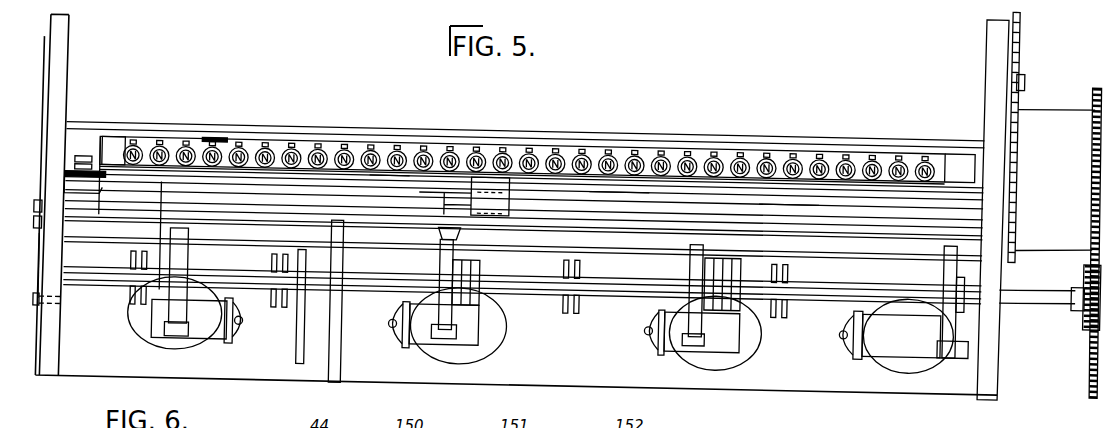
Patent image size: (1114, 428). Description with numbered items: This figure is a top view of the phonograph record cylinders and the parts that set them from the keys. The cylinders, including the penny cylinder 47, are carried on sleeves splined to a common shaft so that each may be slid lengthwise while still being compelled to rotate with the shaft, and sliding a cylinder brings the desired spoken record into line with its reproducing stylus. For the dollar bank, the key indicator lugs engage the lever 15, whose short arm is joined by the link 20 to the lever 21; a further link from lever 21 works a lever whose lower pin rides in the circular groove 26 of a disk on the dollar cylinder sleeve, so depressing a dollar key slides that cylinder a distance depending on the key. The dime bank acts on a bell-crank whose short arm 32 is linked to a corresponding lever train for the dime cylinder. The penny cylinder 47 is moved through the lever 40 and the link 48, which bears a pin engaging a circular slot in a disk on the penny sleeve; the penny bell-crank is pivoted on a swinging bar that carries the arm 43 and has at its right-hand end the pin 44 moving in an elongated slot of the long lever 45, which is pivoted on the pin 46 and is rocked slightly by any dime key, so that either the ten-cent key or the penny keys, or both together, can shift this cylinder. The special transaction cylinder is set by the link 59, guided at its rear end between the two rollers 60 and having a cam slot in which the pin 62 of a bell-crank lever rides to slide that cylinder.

The lever 15 is at (780, 176).
The link 20 is at (63, 193).
The lever 21 is at (75, 160).
The circular groove 26 is at (974, 158).
The short arm 32 is at (383, 168).
The lever 40 is at (612, 176).
The arm 43 is at (177, 143).
The pin 44 is at (215, 138).
The long lever 45 is at (542, 150).
The pin 46 is at (465, 168).
The cylinder 47 is at (232, 150).
The link 48 is at (68, 174).
The link 59 is at (40, 246).
The rollers 60 is at (35, 218).
The pin 62 is at (36, 300).